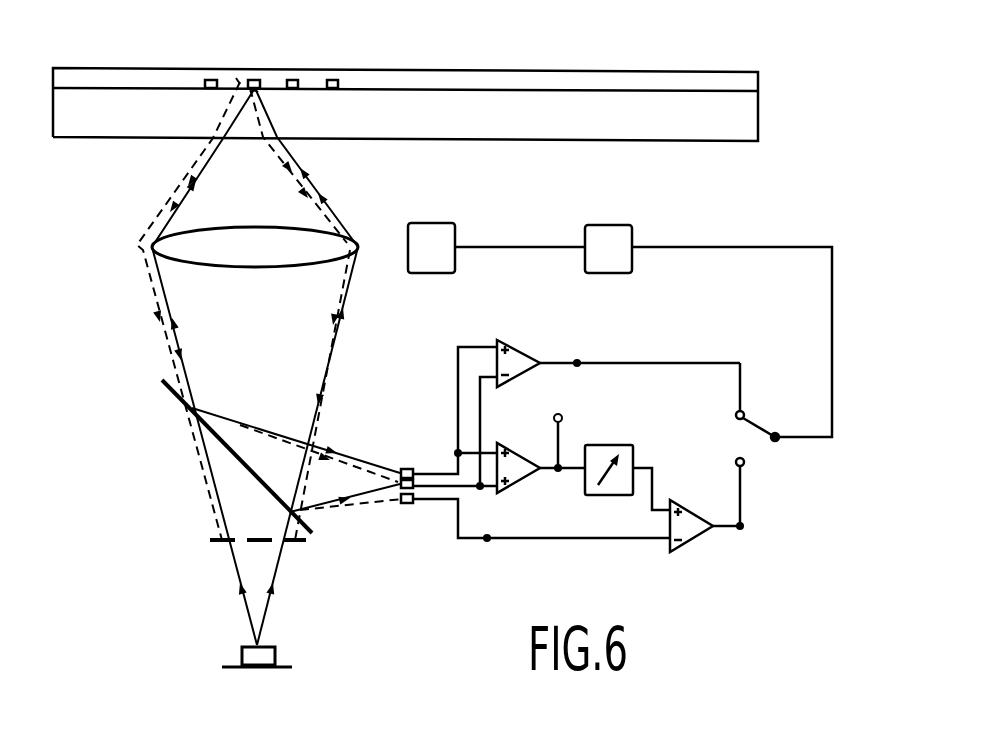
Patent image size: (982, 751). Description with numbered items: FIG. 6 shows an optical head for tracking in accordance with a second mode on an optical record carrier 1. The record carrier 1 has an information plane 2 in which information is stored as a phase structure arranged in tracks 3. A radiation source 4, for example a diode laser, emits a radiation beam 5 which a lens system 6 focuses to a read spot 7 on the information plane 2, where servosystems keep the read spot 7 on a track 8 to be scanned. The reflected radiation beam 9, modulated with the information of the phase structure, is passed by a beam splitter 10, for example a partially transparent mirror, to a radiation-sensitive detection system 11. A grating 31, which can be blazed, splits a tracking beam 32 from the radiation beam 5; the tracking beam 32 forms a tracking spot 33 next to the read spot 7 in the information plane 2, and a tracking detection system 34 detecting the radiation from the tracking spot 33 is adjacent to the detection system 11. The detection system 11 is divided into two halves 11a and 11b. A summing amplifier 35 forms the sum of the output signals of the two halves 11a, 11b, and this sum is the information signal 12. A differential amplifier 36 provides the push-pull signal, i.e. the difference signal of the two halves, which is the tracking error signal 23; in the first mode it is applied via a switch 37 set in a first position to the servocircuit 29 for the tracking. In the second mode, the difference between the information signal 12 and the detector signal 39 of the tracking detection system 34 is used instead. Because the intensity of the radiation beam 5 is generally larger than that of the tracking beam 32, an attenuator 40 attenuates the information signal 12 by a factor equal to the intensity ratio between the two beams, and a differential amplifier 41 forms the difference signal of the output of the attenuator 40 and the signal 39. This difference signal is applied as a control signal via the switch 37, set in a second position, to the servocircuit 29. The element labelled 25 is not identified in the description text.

The optical record carrier 1 is at (774, 44).
The information plane 2 is at (627, 88).
The tracks 3 is at (330, 78).
The radiation source 4 is at (278, 652).
The radiation beam 5 is at (166, 349).
The lens system 6 is at (175, 249).
The read spot 7 is at (250, 92).
The track to be scanned 8 is at (254, 78).
The reflected radiation beam 9 is at (313, 188).
The beam splitter 10 is at (170, 392).
The detection system 11 is at (412, 450).
The first half of detection system 11a is at (400, 470).
The second half of detection system 11b is at (414, 472).
The information signal 12 is at (562, 418).
The tracking error signal 23 is at (578, 362).
The drive unit 25 is at (425, 223).
The servocircuit 29 is at (605, 225).
The grating 31 is at (213, 548).
The tracking beam 32 is at (152, 295).
The tracking spot 33 is at (236, 76).
The tracking detection system 34 is at (407, 507).
The summing amplifier 35 is at (527, 495).
The differential amplifier 36 is at (514, 345).
The switch 37 is at (754, 450).
The detector signal 39 is at (487, 543).
The attenuator 40 is at (620, 497).
The differential amplifier 41 is at (690, 549).